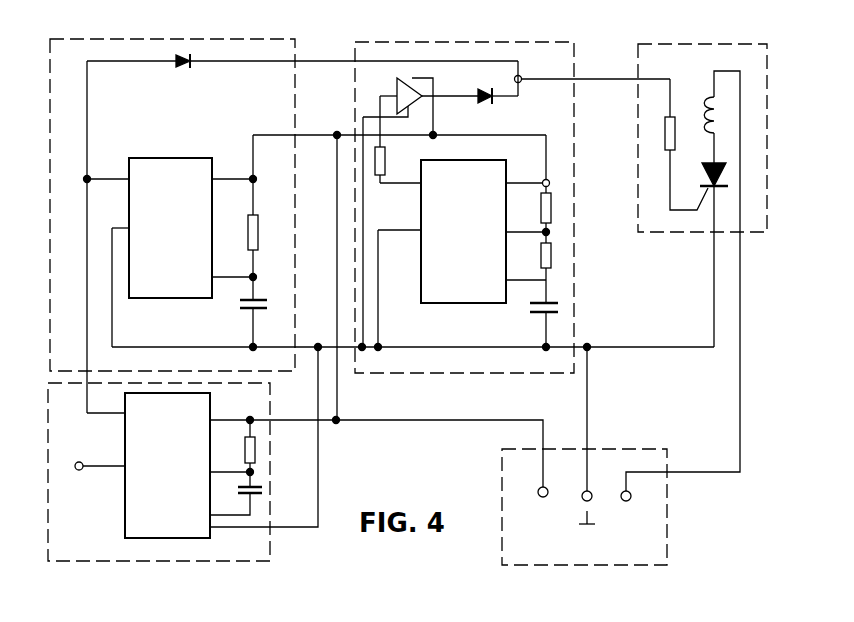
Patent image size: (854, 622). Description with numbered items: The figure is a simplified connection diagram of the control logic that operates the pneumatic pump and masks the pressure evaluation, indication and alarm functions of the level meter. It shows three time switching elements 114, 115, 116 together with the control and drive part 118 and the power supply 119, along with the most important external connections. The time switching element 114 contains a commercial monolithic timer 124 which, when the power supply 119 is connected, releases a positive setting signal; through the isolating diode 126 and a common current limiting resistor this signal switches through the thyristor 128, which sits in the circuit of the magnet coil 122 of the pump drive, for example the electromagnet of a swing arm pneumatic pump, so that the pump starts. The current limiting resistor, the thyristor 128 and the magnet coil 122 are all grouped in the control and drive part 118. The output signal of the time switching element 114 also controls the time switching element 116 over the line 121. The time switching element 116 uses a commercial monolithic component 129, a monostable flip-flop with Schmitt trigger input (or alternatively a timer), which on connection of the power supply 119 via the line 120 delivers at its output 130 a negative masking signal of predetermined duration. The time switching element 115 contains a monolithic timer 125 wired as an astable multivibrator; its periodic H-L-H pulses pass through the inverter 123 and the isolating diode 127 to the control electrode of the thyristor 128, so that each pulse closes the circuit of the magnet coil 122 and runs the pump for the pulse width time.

The time switching element 114 is at (72, 49).
The time switching element 115 is at (542, 58).
The time switching element 116 is at (252, 398).
The control and drive part 118 is at (684, 58).
The power supply 119 is at (652, 497).
The line 120 is at (484, 418).
The line 121 is at (84, 393).
The magnet coil 122 is at (716, 100).
The inverter 123 is at (404, 78).
The timer 124 is at (178, 170).
The timer 125 is at (478, 180).
The isolating diode 126 is at (185, 56).
The isolating diode 127 is at (484, 90).
The thyristor 128 is at (703, 173).
The monolithic component 129 is at (195, 492).
The output 130 is at (80, 470).